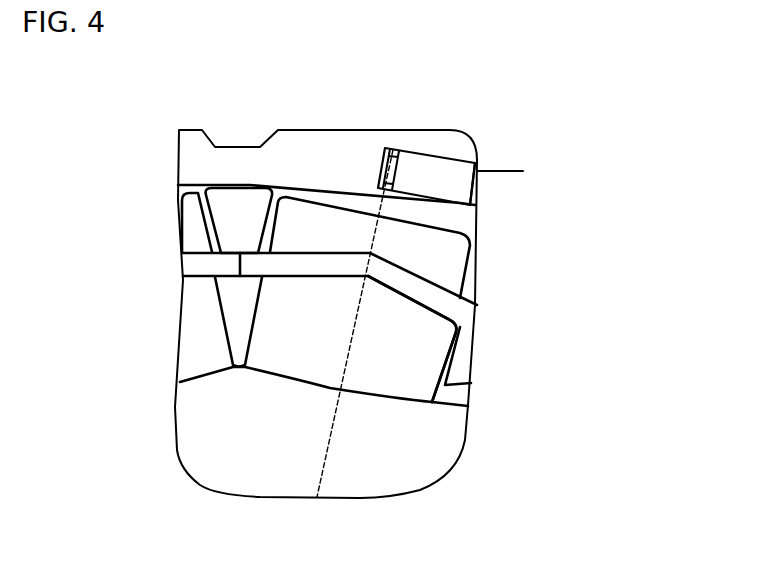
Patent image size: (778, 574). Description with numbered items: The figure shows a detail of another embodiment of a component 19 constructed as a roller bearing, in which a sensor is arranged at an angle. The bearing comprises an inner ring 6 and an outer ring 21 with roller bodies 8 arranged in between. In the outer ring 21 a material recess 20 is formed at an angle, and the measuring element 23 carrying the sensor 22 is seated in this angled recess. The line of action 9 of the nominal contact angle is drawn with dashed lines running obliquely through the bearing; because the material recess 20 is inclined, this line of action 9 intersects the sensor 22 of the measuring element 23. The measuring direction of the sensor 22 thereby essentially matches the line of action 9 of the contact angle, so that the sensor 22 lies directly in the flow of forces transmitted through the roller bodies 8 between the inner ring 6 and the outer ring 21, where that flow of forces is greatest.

The inner ring 6 is at (435, 439).
The roller bodies 8 is at (417, 350).
The line of action 9 is at (327, 449).
The component 19 is at (612, 163).
The material recess 20 is at (440, 157).
The outer ring 21 is at (299, 145).
The sensor 22 is at (393, 150).
The measuring element 23 is at (465, 185).